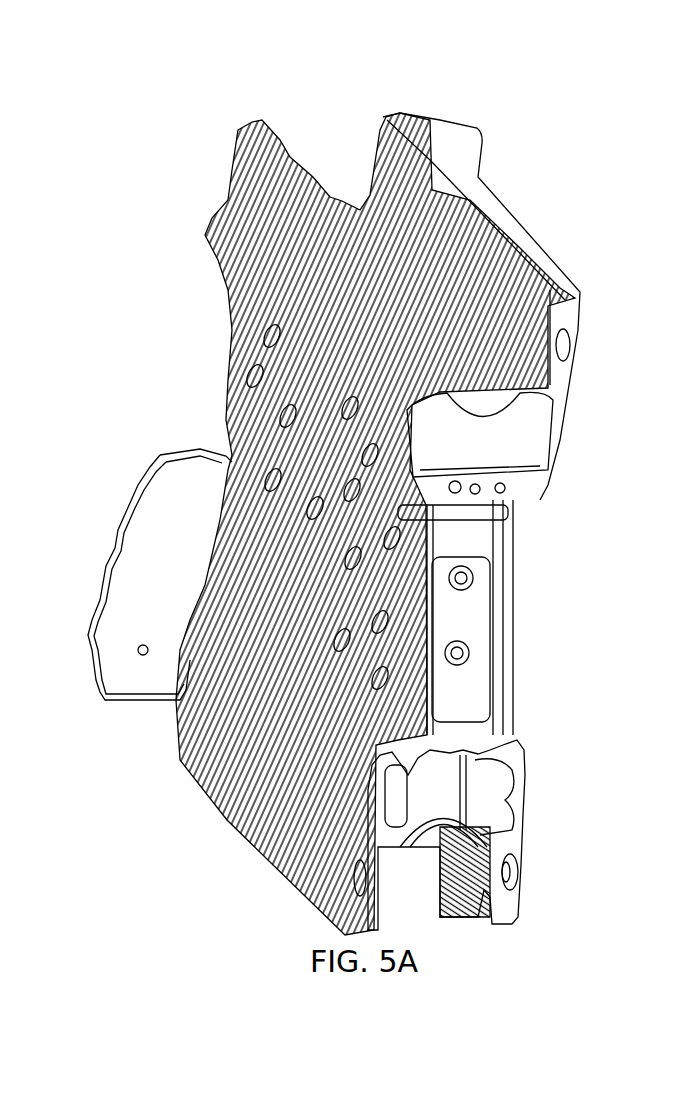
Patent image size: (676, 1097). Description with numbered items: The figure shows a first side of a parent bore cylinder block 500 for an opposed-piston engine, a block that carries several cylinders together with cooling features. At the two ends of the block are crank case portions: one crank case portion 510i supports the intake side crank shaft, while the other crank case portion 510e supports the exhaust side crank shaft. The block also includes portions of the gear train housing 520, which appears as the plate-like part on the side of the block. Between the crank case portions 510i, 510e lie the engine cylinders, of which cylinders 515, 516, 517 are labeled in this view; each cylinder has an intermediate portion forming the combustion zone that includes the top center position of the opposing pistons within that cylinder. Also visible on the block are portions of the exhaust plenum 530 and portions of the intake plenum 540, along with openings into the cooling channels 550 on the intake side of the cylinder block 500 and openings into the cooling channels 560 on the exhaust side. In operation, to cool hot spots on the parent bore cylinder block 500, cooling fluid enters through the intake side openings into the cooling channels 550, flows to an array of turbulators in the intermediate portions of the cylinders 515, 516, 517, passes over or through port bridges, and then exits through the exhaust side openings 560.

The parent bore cylinder block 500 is at (117, 153).
The exhaust side crank case portion 510e is at (563, 388).
The intake side crank case portion 510i is at (522, 793).
The cylinder 515 is at (348, 563).
The cylinder 516 is at (310, 513).
The cylinder 517 is at (268, 485).
The gear train housing 520 is at (195, 591).
The exhaust plenum 530 is at (283, 413).
The intake plenum 540 is at (375, 683).
The intake side cooling channel openings 550 is at (375, 627).
The exhaust side cooling channel openings 560 is at (345, 405).